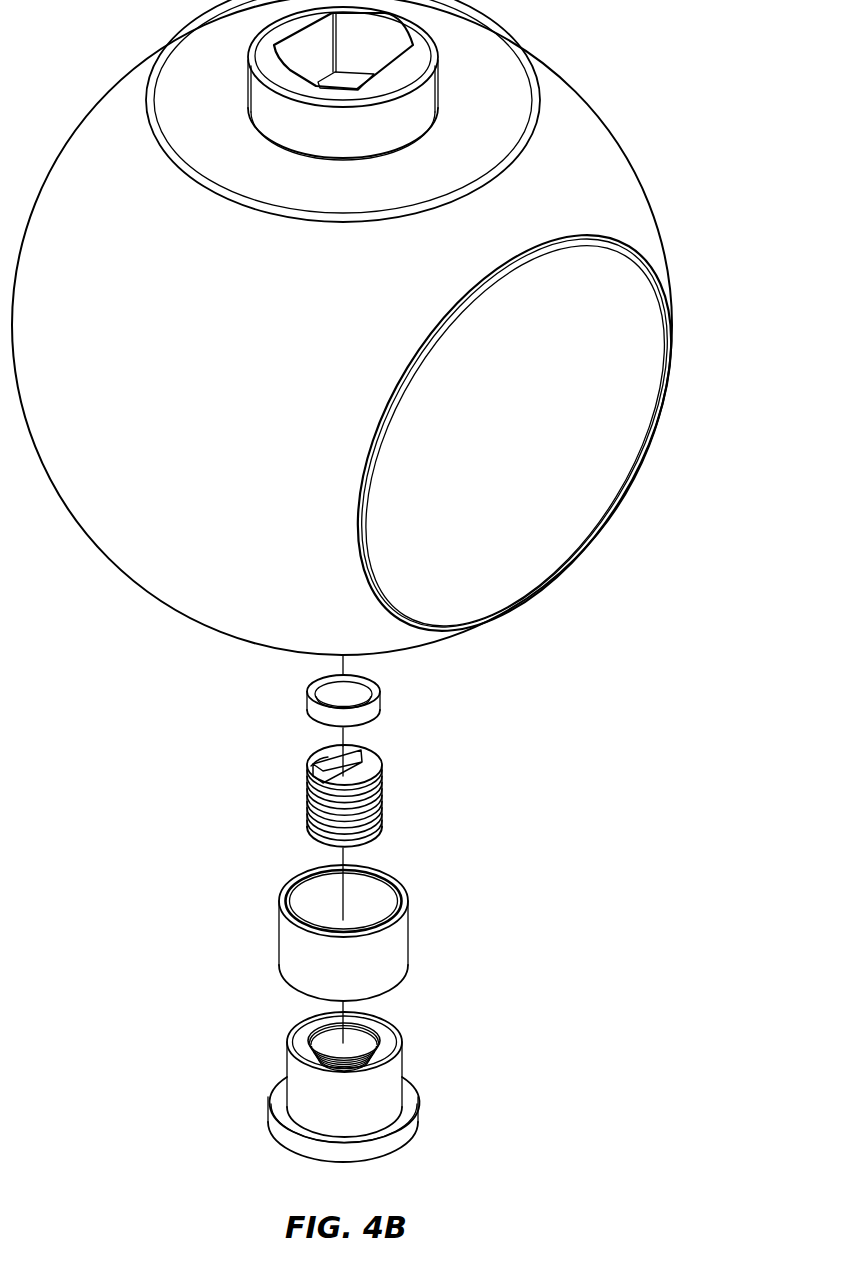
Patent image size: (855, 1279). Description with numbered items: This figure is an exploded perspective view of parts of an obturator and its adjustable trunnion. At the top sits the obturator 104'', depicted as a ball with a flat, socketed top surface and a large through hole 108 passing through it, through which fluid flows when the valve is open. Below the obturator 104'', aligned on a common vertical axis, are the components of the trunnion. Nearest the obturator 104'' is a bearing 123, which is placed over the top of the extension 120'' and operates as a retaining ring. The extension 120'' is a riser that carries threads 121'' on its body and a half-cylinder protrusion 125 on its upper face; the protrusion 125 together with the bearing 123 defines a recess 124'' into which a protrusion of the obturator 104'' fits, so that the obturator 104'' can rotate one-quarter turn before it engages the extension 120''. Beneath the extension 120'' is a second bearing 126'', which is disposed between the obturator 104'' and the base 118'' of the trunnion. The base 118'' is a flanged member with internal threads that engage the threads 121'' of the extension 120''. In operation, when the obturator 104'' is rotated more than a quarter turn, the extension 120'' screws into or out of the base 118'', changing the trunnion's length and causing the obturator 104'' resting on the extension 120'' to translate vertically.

The obturator 104'' is at (376, 327).
The through hole 108 is at (593, 467).
The bearing 123 is at (308, 693).
The extension 120'' is at (366, 780).
The threads 121'' is at (406, 765).
The recess 124'' is at (399, 748).
The half-cylinder protrusion 125 is at (327, 758).
The bearing 126'' is at (404, 933).
The base 118'' is at (399, 1087).